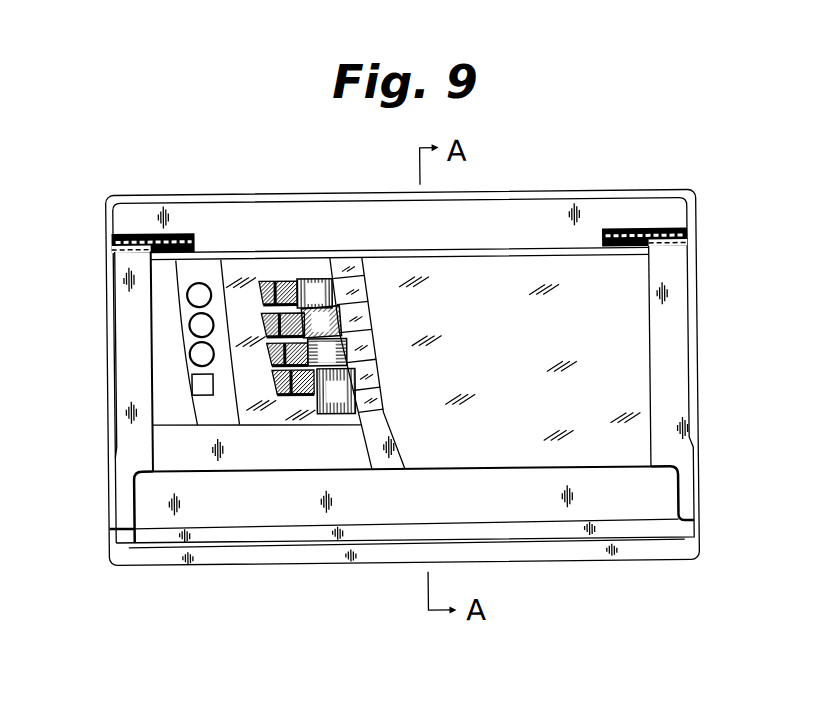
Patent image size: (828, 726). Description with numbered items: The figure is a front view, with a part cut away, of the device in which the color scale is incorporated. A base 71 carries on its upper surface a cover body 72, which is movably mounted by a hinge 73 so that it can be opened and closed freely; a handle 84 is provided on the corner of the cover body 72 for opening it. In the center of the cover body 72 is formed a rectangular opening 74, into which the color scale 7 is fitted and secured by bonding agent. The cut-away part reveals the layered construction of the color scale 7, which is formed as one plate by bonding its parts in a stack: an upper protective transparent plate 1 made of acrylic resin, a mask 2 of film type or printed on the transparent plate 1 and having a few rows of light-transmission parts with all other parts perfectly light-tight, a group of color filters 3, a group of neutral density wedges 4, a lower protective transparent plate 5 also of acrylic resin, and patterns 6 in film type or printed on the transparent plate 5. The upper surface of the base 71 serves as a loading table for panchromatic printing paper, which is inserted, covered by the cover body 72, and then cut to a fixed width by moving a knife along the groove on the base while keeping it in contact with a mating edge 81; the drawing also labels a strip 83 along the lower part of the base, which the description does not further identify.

The protective transparent plate 1 is at (484, 258).
The mask 2 is at (346, 263).
The group of color filters 3 is at (311, 277).
The group of neutral density wedges 4 is at (284, 280).
The protective transparent plate 5 is at (238, 266).
The patterns 6 is at (199, 268).
The color scale 7 is at (548, 259).
The base 71 is at (107, 212).
The cover body 72 is at (123, 384).
The hinge 73 is at (132, 234).
The rectangular opening 74 is at (155, 324).
The mating edge 81 is at (634, 531).
The base strip 83 is at (570, 542).
The handle 84 is at (119, 495).